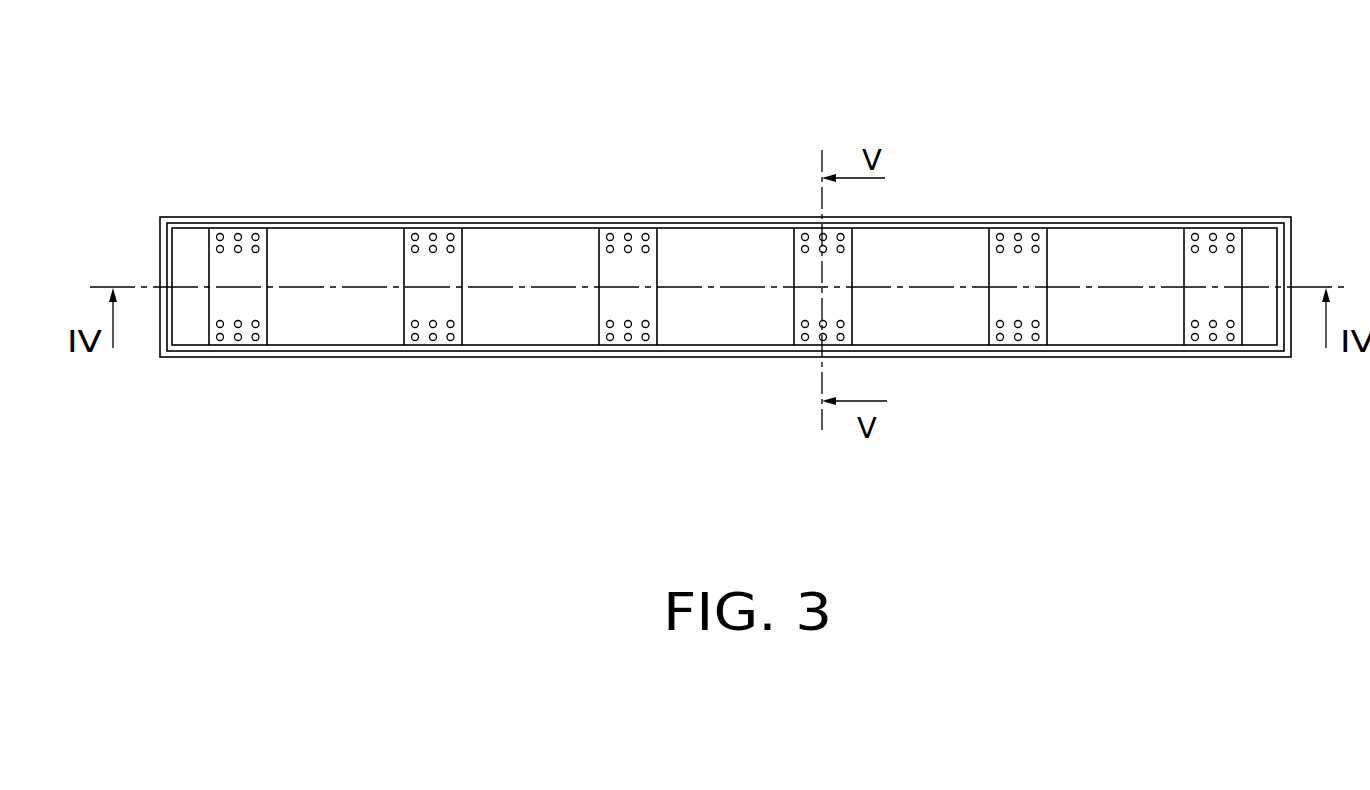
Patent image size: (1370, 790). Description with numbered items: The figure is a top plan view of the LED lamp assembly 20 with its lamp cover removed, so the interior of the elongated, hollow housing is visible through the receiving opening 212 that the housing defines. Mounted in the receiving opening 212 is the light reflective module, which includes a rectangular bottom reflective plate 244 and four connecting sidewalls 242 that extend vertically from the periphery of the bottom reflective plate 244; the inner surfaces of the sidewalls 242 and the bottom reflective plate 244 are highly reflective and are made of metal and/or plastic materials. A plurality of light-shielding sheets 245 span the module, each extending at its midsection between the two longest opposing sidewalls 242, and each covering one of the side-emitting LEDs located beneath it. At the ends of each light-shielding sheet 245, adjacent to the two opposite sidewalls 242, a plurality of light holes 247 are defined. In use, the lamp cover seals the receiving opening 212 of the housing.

The LED lamp assembly 20 is at (763, 71).
The receiving opening 212 is at (1263, 222).
The connecting sidewalls 242 is at (1205, 228).
The bottom reflective plate 244 is at (945, 245).
The light-shielding sheets 245 is at (1037, 270).
The light holes 247 is at (1036, 236).